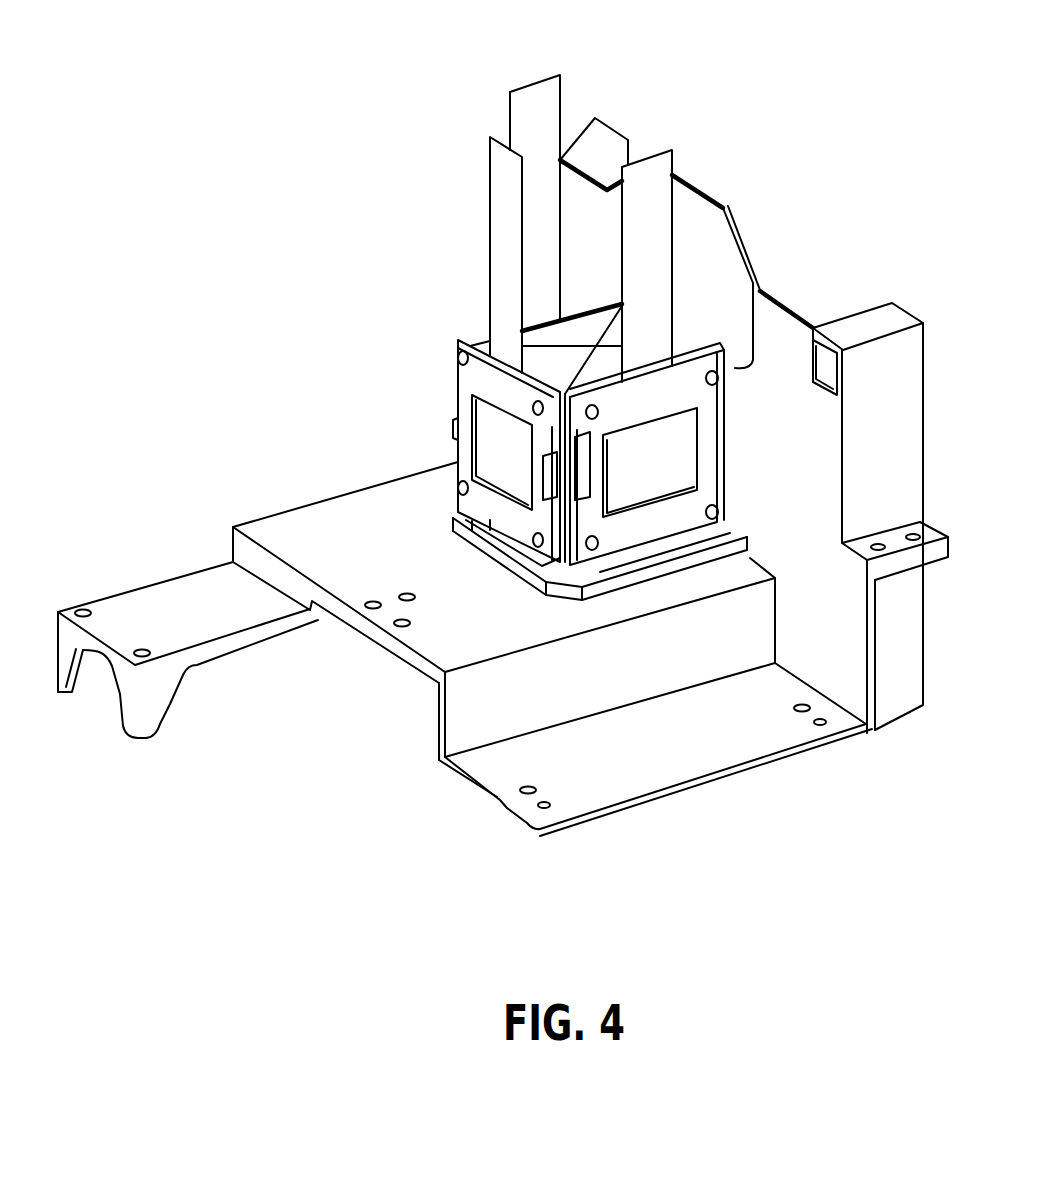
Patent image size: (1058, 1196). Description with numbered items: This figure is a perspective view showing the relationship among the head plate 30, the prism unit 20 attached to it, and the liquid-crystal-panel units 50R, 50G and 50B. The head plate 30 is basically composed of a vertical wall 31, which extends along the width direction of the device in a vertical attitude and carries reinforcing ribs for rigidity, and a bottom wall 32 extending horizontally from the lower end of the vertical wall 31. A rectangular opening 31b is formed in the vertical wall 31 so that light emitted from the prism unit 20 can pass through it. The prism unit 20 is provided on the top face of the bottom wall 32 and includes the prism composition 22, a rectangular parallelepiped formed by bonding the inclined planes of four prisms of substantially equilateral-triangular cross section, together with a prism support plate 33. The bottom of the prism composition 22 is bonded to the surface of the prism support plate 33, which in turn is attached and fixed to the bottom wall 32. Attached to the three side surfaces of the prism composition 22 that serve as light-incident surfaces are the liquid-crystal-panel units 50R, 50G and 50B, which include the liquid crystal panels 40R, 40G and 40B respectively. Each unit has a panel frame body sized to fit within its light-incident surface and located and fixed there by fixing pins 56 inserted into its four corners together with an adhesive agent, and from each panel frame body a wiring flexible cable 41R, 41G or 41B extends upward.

The prism unit 20 is at (470, 248).
The prism composition 22 is at (585, 309).
The head plate 30 is at (762, 208).
The vertical wall 31 is at (787, 343).
The rectangular opening 31b is at (758, 262).
The bottom wall 32 is at (442, 648).
The prism support plate 33 is at (511, 562).
The liquid crystal panel 40B is at (483, 328).
The liquid crystal panel 40G is at (500, 456).
The liquid crystal panel 40R is at (662, 484).
The wiring flexible cable 41B is at (533, 98).
The wiring flexible cable 41G is at (490, 147).
The wiring flexible cable 41R is at (648, 168).
The liquid-crystal-panel unit 50B is at (460, 316).
The liquid-crystal-panel unit 50G is at (437, 426).
The liquid-crystal-panel unit 50R is at (560, 598).
The fixing pin 56 is at (462, 356).